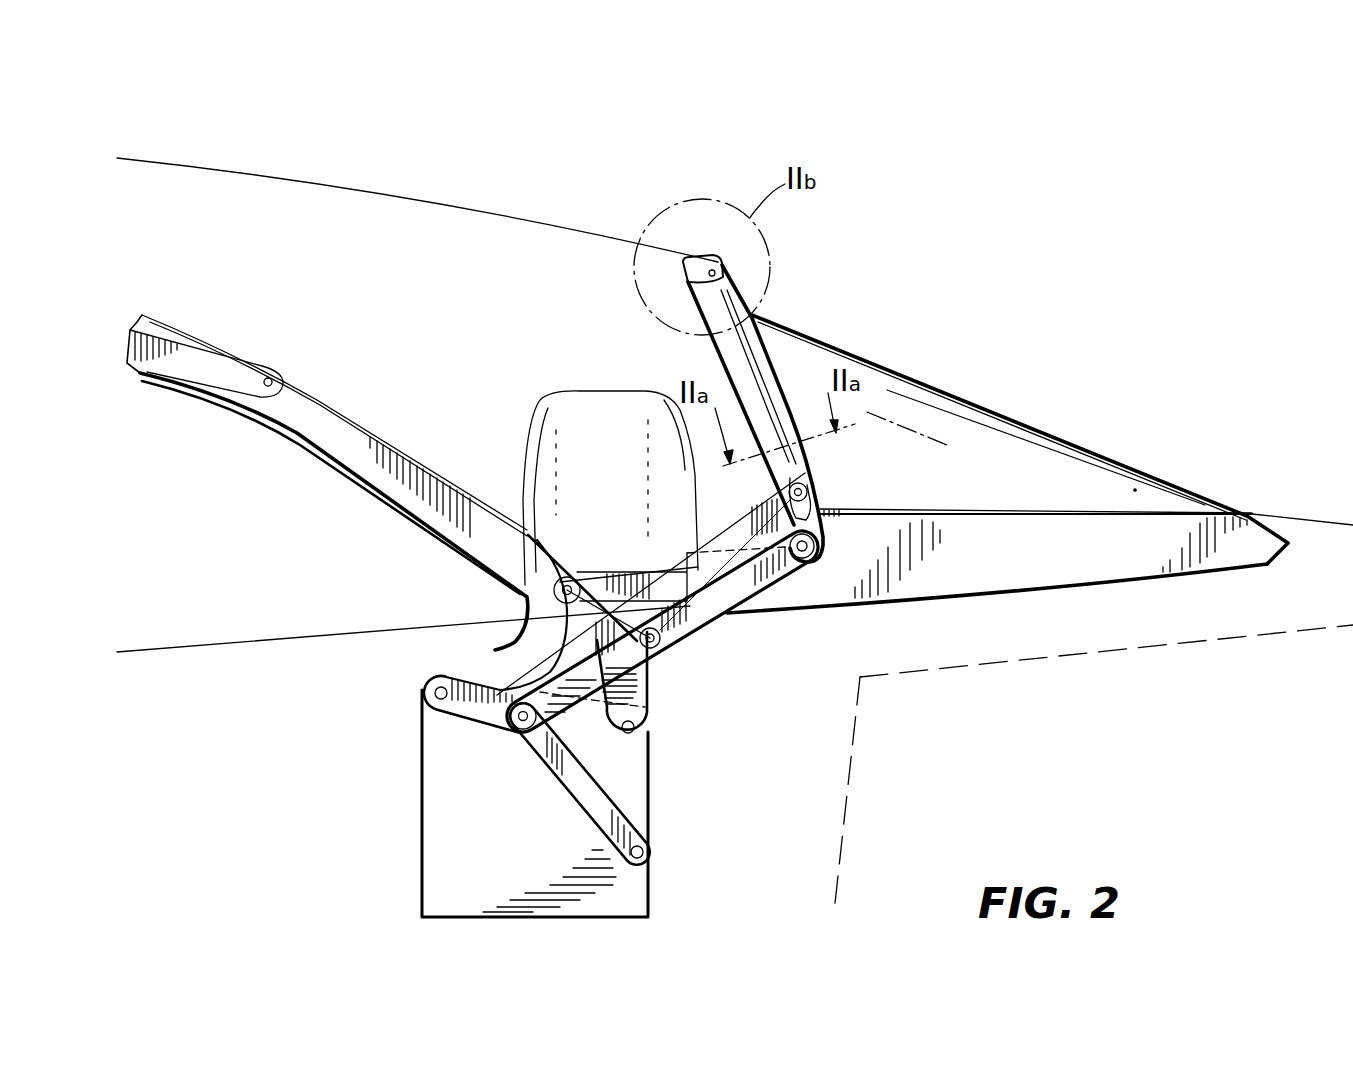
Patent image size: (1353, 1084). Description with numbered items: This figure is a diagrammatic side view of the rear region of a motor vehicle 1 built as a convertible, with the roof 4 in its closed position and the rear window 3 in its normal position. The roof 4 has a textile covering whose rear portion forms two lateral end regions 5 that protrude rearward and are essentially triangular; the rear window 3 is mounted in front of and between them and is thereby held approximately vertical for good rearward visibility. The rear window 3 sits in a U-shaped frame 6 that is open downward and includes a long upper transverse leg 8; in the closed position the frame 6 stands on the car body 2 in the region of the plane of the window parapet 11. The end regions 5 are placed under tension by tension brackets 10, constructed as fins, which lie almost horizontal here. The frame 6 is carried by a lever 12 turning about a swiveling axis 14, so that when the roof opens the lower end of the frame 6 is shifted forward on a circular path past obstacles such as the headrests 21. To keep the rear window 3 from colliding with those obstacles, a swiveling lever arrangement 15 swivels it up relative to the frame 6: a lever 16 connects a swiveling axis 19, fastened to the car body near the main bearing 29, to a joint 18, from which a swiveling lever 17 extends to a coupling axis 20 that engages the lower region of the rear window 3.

The motor vehicle 1 is at (697, 178).
The car body 2 is at (196, 760).
The rear window 3 is at (788, 355).
The roof 4 is at (488, 250).
The lateral end regions 5 is at (983, 496).
The U-shaped frame 6 is at (800, 395).
The upper transverse leg 8 is at (653, 663).
The tension brackets 10 is at (1058, 572).
The window parapet 11 is at (895, 500).
The lever 12 is at (727, 612).
The swiveling axis 14 is at (667, 645).
The swiveling lever arrangement 15 is at (726, 527).
The lever 16 is at (600, 813).
The swiveling lever 17 is at (530, 647).
The joint 18 is at (517, 720).
The swiveling axis 19 is at (642, 853).
The coupling axis 20 is at (803, 488).
The headrests 21 is at (611, 473).
The main bearing 29 is at (536, 873).